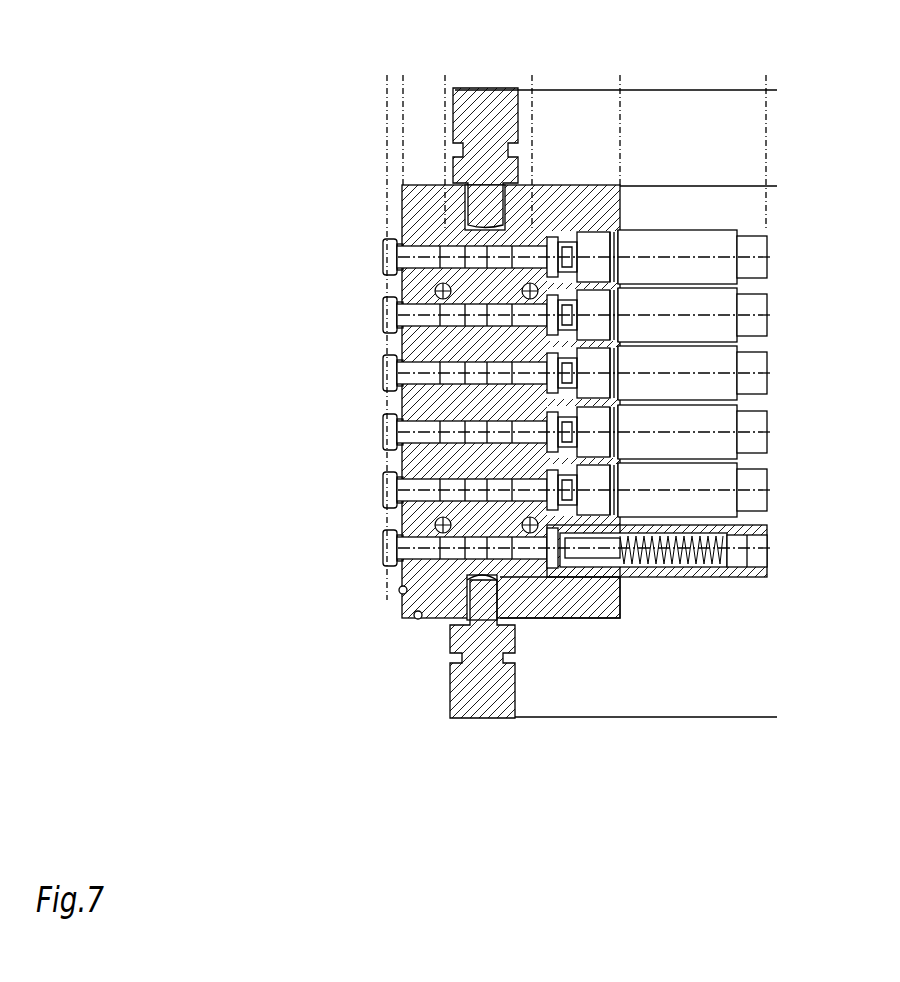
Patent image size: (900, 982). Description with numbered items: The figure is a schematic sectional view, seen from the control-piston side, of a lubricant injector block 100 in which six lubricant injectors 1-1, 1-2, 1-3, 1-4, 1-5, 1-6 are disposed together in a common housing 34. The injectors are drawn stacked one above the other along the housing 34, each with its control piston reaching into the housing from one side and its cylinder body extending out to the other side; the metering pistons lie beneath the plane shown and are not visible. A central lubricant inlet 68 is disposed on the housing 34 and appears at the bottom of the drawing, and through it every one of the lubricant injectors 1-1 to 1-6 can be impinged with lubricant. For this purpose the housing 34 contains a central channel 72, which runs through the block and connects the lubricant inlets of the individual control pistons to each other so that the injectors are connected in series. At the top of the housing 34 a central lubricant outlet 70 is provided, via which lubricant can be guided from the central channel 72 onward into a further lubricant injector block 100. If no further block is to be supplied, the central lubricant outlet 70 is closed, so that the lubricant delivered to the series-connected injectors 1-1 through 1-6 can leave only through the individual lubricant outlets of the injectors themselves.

The lubricant injector block 100 is at (557, 32).
The central lubricant outlet 70 is at (473, 120).
The central channel 72 is at (470, 343).
The central lubricant inlet 68 is at (458, 640).
The housing 34 is at (573, 602).
The lubricant injector 1-1 is at (778, 548).
The lubricant injector 1-2 is at (778, 490).
The lubricant injector 1-3 is at (778, 432).
The lubricant injector 1-4 is at (778, 373).
The lubricant injector 1-5 is at (778, 315).
The lubricant injector 1-6 is at (778, 257).